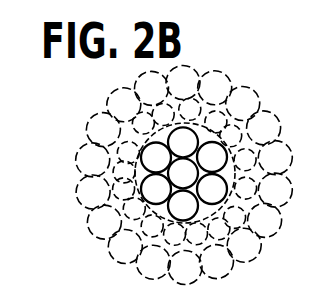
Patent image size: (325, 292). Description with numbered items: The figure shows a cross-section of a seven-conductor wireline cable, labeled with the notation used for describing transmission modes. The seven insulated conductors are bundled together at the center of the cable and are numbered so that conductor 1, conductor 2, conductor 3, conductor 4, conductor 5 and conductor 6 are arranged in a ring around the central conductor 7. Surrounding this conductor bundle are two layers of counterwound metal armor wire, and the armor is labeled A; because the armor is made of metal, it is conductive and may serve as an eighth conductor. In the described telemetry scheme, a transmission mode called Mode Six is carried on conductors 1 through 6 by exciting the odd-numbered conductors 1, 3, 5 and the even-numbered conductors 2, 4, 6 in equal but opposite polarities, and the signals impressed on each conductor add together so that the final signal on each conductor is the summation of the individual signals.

The conductor 1 is at (183, 142).
The conductor 2 is at (212, 157).
The conductor 3 is at (212, 189).
The conductor 4 is at (183, 206).
The conductor 5 is at (156, 189).
The conductor 6 is at (156, 158).
The conductor 7 is at (183, 173).
The armor A is at (275, 158).